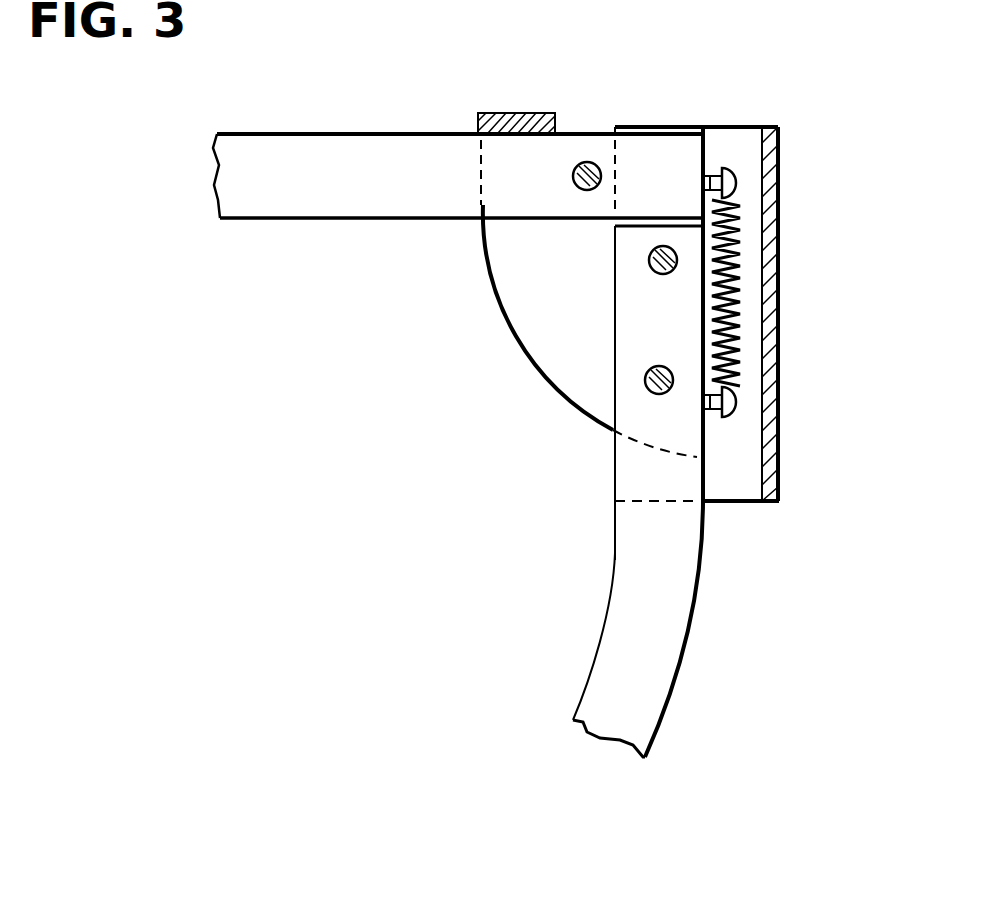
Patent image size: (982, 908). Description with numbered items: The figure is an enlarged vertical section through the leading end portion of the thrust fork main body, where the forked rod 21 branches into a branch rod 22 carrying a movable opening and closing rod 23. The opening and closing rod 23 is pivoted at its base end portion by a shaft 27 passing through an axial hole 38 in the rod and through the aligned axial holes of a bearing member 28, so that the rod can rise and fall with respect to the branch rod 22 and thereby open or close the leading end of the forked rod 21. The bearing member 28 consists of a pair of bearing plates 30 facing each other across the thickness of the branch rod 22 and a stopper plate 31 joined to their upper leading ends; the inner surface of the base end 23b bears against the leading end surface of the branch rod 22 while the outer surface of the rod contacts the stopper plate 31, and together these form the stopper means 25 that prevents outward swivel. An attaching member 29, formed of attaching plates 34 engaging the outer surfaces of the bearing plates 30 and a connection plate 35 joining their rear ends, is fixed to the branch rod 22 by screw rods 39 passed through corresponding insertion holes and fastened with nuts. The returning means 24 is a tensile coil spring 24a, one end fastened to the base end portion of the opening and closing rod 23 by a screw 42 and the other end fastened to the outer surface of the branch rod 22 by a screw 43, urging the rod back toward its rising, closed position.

The forked rod 21 is at (630, 572).
The branch rod 22 is at (612, 643).
The opening and closing rod 23 is at (253, 219).
The base end 23b is at (655, 153).
The returning means 24 is at (752, 259).
The tensile coil spring 24a is at (742, 287).
The stopper means 25 is at (557, 99).
The shaft 27 is at (573, 177).
The bearing member 28 is at (545, 334).
The attaching member 29 is at (787, 131).
The bearing plate 30 is at (567, 365).
The stopper plate 31 is at (505, 113).
The attaching plate 34 is at (740, 487).
The connection plate 35 is at (780, 463).
The axial hole 38 is at (577, 188).
The screw rod 39 is at (650, 263).
The screw 42 is at (735, 182).
The screw 43 is at (737, 397).